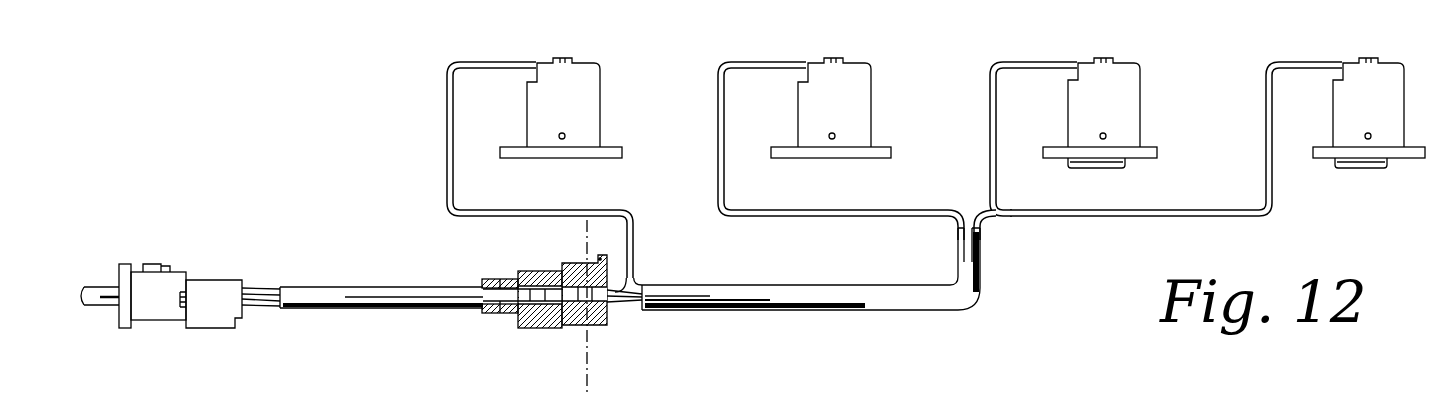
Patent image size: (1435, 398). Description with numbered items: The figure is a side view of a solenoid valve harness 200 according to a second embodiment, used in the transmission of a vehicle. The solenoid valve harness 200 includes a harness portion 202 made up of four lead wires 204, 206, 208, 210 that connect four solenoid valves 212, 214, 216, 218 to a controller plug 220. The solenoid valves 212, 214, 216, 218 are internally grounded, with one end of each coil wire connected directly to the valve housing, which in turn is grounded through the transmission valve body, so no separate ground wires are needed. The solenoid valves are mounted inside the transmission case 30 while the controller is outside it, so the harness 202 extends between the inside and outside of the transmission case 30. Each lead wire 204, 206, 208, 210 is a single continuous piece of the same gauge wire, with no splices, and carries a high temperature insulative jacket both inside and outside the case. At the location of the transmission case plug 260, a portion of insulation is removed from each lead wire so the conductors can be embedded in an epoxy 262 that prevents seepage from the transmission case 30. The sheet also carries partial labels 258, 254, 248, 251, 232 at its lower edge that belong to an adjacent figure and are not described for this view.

The solenoid valve harness 200 is at (412, 85).
The harness portion 202 is at (368, 268).
The lead wire 204 is at (636, 240).
The lead wire 206 is at (725, 178).
The lead wire 208 is at (997, 183).
The lead wire 210 is at (1140, 218).
The solenoid valve 212 is at (586, 92).
The solenoid valve 214 is at (868, 97).
The solenoid valve 216 is at (1138, 96).
The solenoid valve 218 is at (1404, 127).
The controller plug 220 is at (162, 310).
The transmission case plug 260 is at (520, 328).
The epoxy 262 is at (572, 263).
The transmission case 30 is at (590, 375).
The component (partial) 258 is at (885, 397).
The component (partial) 254 is at (980, 386).
The component (partial) 248 is at (917, 397).
The component (partial) 251 is at (1085, 396).
The component (partial) 232 is at (1195, 396).